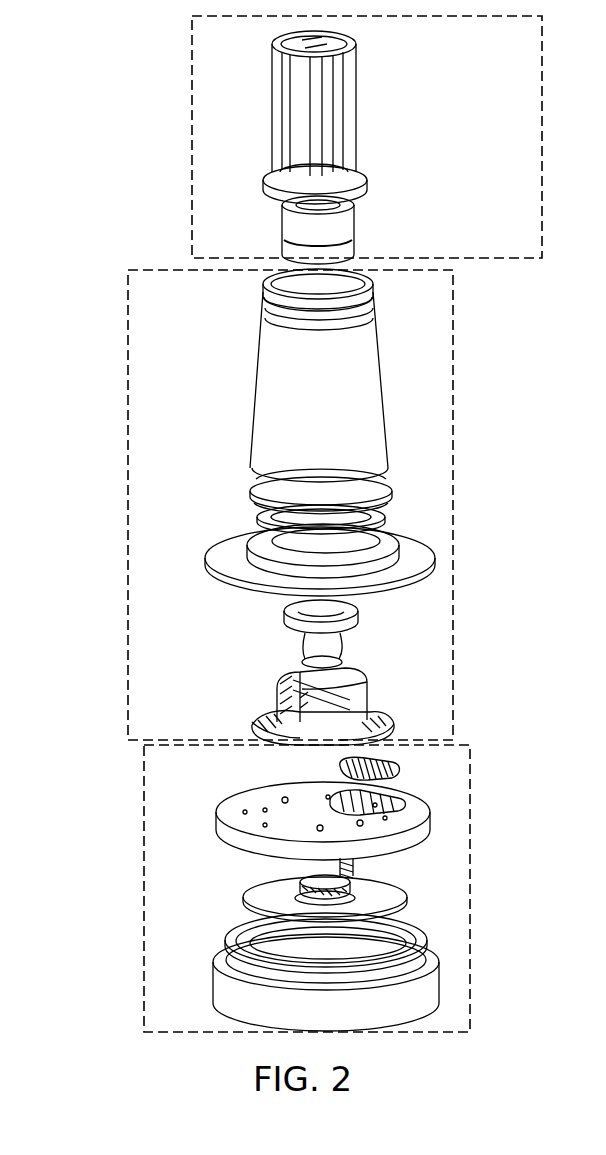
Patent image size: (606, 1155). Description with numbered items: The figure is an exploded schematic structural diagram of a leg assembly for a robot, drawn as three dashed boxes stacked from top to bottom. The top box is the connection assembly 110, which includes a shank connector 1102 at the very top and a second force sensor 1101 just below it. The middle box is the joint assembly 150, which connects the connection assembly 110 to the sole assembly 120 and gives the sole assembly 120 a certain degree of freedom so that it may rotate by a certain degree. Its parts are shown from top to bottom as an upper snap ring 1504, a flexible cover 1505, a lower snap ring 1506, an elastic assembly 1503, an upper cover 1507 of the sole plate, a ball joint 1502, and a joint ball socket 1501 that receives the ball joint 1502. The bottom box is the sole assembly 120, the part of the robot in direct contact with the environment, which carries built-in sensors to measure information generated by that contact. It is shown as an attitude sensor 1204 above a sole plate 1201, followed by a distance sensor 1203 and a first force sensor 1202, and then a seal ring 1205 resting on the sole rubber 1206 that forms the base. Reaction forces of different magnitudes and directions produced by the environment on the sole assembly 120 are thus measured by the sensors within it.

The connection assembly 110 is at (192, 147).
The sole assembly 120 is at (158, 892).
The joint assembly 150 is at (453, 448).
The second force sensor 1101 is at (357, 226).
The shank connector 1102 is at (356, 112).
The joint ball socket 1501 is at (258, 716).
The ball joint 1502 is at (290, 665).
The elastic assembly 1503 is at (262, 528).
The upper snap ring 1504 is at (272, 300).
The flexible cover 1505 is at (285, 386).
The lower snap ring 1506 is at (270, 496).
The upper cover of a sole plate 1507 is at (232, 568).
The sole plate 1201 is at (430, 808).
The first force sensor 1202 is at (360, 888).
The distance sensor 1203 is at (400, 880).
The attitude sensor 1204 is at (398, 763).
The seal ring 1205 is at (418, 936).
The sole rubber 1206 is at (428, 1000).